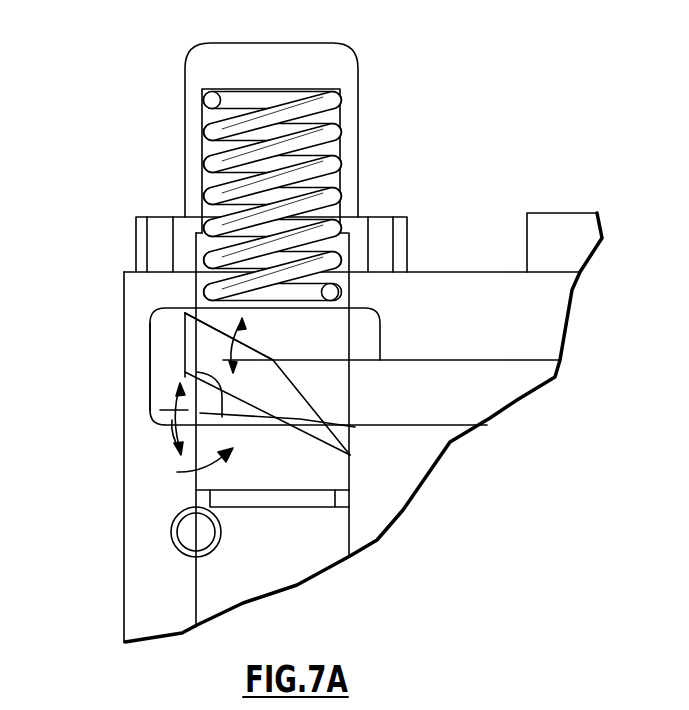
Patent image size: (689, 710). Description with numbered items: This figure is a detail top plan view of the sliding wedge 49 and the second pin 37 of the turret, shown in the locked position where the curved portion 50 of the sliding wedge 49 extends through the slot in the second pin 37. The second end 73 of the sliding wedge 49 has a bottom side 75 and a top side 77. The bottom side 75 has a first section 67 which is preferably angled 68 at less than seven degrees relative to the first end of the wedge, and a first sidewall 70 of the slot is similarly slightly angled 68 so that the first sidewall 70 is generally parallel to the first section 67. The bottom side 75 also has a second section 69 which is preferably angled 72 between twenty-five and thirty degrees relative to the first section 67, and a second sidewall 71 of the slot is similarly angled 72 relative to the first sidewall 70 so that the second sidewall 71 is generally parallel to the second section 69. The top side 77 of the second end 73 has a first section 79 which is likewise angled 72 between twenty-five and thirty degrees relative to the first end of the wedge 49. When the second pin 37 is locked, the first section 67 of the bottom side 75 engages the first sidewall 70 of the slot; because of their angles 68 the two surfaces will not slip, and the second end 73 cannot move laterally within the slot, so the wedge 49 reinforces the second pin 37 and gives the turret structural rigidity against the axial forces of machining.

The second pin 37 is at (254, 478).
The sliding wedge 49 is at (452, 377).
The curved portion 50 is at (189, 468).
The first section 67 is at (355, 427).
The angle 68 is at (200, 413).
The second section 69 is at (172, 382).
The first sidewall 70 is at (184, 372).
The second sidewall 71 is at (337, 448).
The angle 72 is at (210, 357).
The second end 73 is at (207, 357).
The bottom side 75 is at (275, 418).
The top side 77 is at (323, 358).
The first section 79 is at (247, 350).